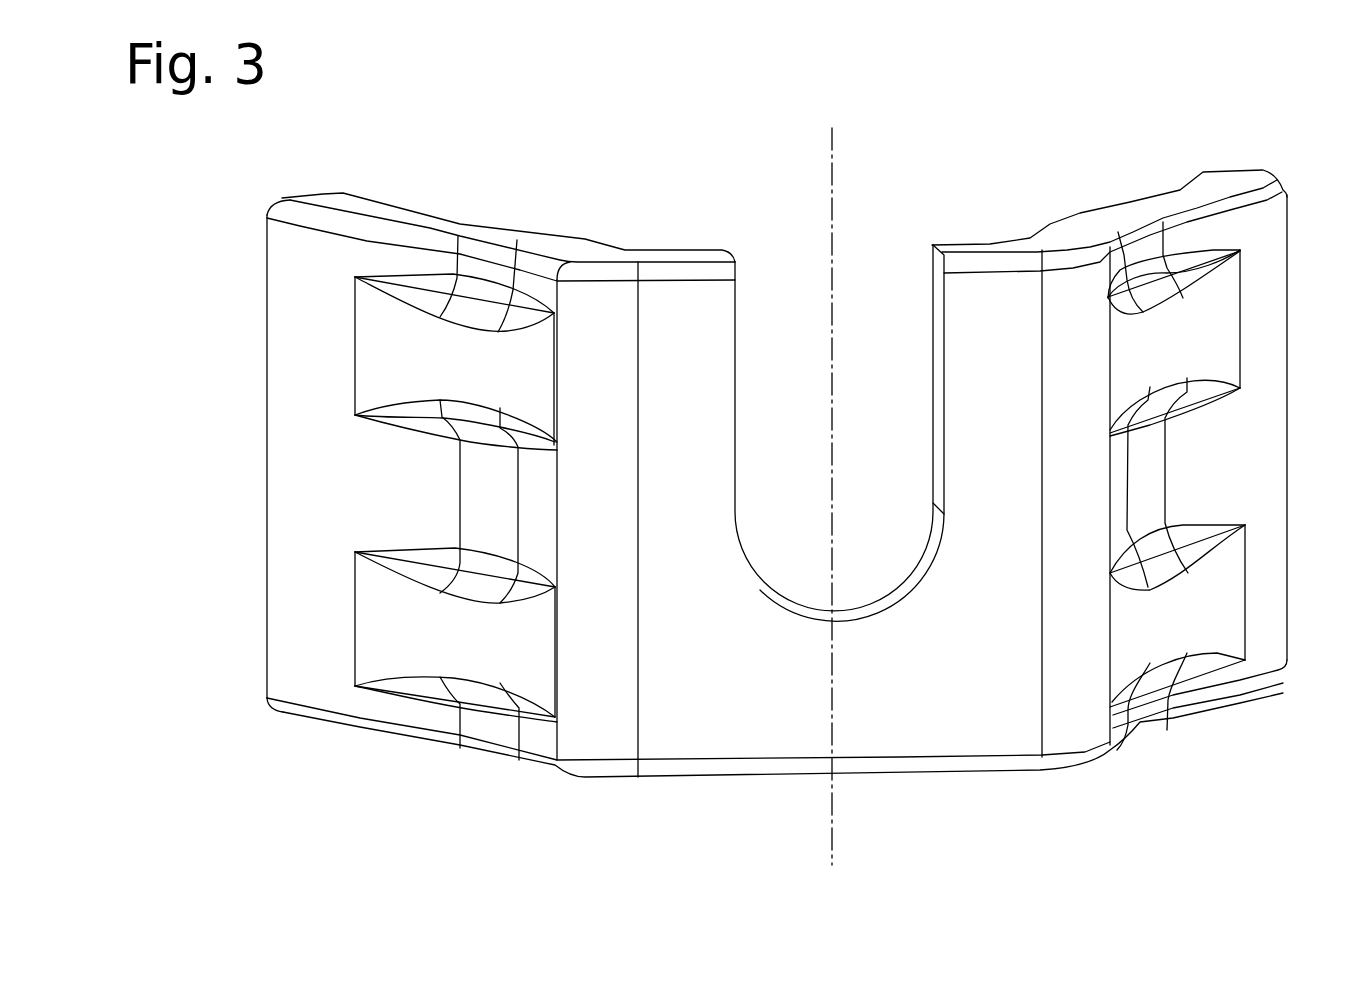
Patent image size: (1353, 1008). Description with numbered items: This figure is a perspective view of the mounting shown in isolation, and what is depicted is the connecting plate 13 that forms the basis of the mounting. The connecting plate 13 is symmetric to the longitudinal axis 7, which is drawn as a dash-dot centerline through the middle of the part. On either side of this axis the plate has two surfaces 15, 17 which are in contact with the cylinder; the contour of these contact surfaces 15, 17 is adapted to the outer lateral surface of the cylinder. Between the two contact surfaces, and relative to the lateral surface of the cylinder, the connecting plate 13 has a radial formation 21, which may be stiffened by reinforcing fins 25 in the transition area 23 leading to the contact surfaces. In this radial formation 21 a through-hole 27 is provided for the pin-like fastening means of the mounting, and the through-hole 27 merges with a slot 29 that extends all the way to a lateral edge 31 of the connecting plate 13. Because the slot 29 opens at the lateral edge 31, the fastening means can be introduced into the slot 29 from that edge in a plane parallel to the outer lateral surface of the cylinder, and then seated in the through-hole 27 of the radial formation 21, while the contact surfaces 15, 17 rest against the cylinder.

The longitudinal axis 7 is at (835, 130).
The connecting plate 13 is at (785, 807).
The contact surface 15 is at (436, 220).
The contact surface 17 is at (1180, 192).
The radial formation 21 is at (990, 693).
The transition area 23 is at (517, 503).
The reinforcing fins 25 is at (430, 352).
The through-hole 27 is at (877, 542).
The slot 29 is at (873, 430).
The lateral edge 31 is at (668, 257).